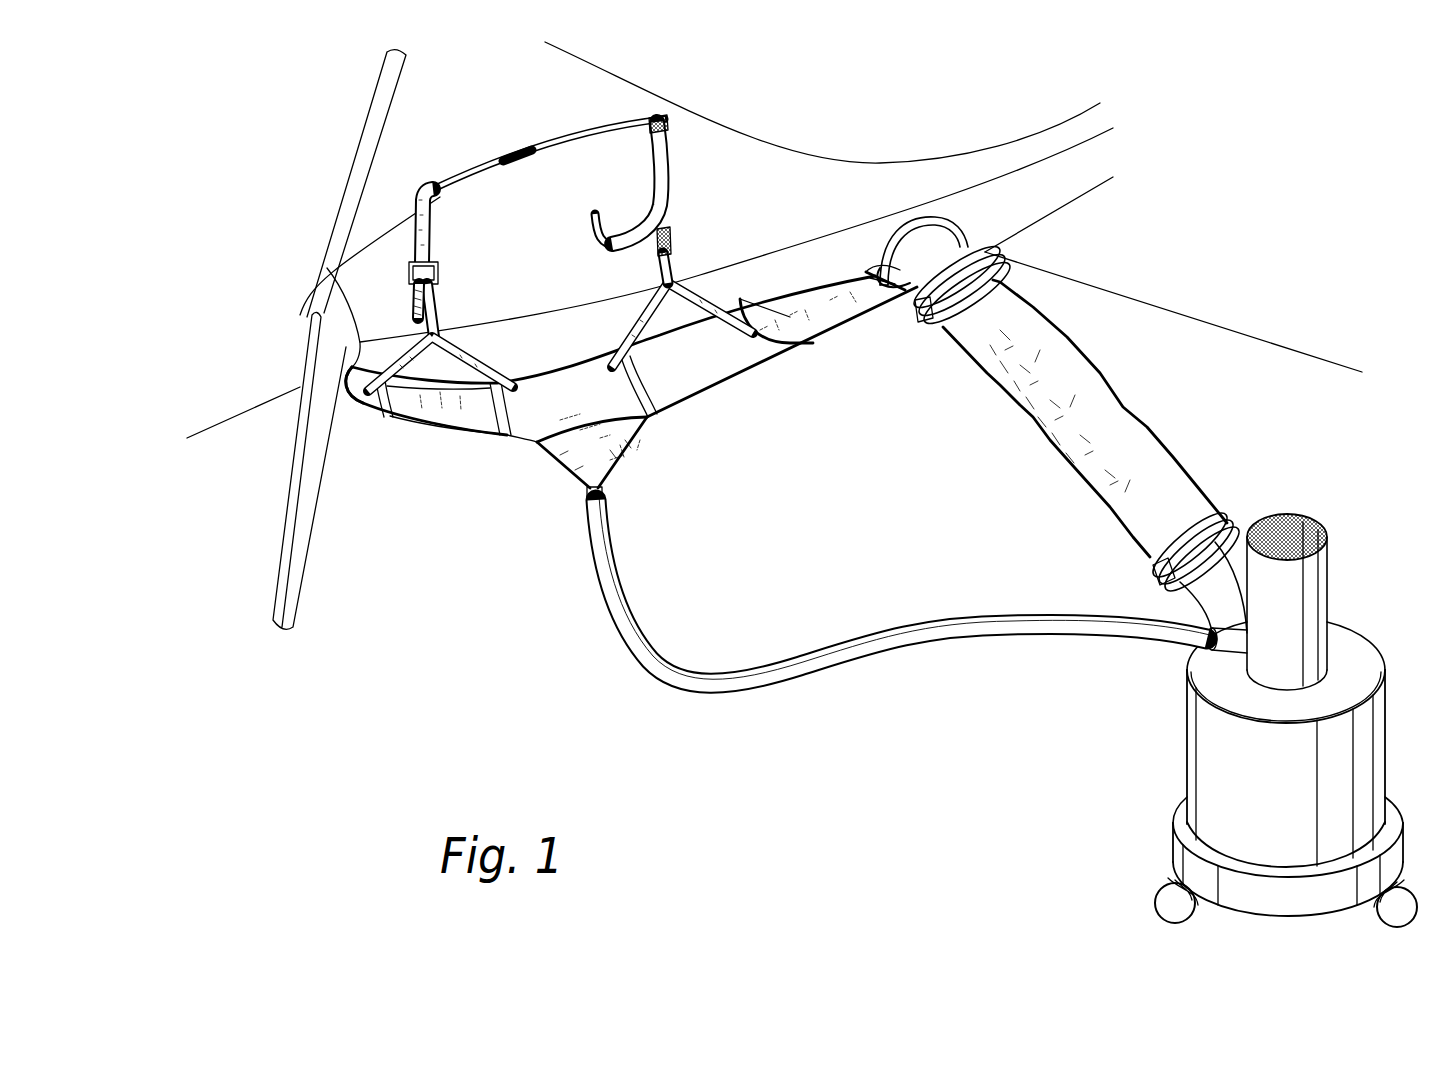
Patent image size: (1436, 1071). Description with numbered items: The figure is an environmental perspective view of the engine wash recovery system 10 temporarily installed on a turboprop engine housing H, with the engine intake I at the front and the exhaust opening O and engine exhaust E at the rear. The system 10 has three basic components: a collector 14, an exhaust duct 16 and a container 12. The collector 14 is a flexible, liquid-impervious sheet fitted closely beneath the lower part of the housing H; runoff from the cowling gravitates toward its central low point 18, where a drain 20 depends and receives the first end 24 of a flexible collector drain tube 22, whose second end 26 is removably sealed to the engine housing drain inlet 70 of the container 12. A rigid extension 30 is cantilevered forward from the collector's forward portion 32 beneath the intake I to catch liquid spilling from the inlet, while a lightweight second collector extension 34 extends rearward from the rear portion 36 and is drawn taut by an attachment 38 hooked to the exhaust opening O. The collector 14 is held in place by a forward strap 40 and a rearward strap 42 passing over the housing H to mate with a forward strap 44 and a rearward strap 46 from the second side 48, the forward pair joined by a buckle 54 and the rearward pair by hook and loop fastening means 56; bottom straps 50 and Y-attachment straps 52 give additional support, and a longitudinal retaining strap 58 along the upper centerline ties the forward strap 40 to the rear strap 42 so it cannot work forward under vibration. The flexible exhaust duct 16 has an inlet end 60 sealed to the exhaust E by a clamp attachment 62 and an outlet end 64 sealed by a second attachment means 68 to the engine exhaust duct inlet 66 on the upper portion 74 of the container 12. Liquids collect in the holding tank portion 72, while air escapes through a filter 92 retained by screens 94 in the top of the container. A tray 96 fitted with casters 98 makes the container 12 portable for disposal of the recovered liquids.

The engine wash recovery system 10 is at (855, 715).
The container 12 is at (1186, 728).
The collector 14 is at (580, 394).
The exhaust duct 16 is at (1050, 443).
The low point 18 is at (634, 442).
The drain 20 is at (588, 498).
The collector drain tube 22 is at (783, 655).
The first end 24 is at (620, 540).
The second end 26 is at (1176, 640).
The rigid extension 30 is at (355, 402).
The forward portion 32 is at (403, 418).
The second collector extension 34 is at (803, 298).
The rear portion 36 is at (808, 345).
The attachment 38 is at (880, 278).
The forward strap 40 is at (432, 226).
The rearward strap 42 is at (668, 183).
The mating forward strap 44 is at (440, 312).
The mating rearward strap 46 is at (672, 248).
The second side 48 is at (570, 365).
The bottom straps 50 is at (480, 432).
The Y-attachment straps 52 is at (407, 350).
The buckle 54 is at (408, 272).
The hook and loop fastening means 56 is at (528, 153).
The longitudinal retaining strap 58 is at (567, 138).
The inlet end 60 is at (1000, 301).
The attachment 62 is at (928, 326).
The outlet end 64 is at (1212, 484).
The engine exhaust duct inlet 66 is at (1195, 613).
The second attachment means 68 is at (1152, 543).
The engine housing drain inlet 70 is at (1222, 652).
The holding tank portion 72 is at (1296, 808).
The upper portion 74 is at (1290, 636).
The filter 92 is at (1303, 588).
The screens 94 is at (1292, 530).
The tray 96 is at (1174, 827).
The casters 98 is at (1378, 914).
The engine housing H is at (556, 234).
The intake I is at (307, 350).
The exhaust opening O is at (936, 238).
The engine exhaust E is at (985, 250).